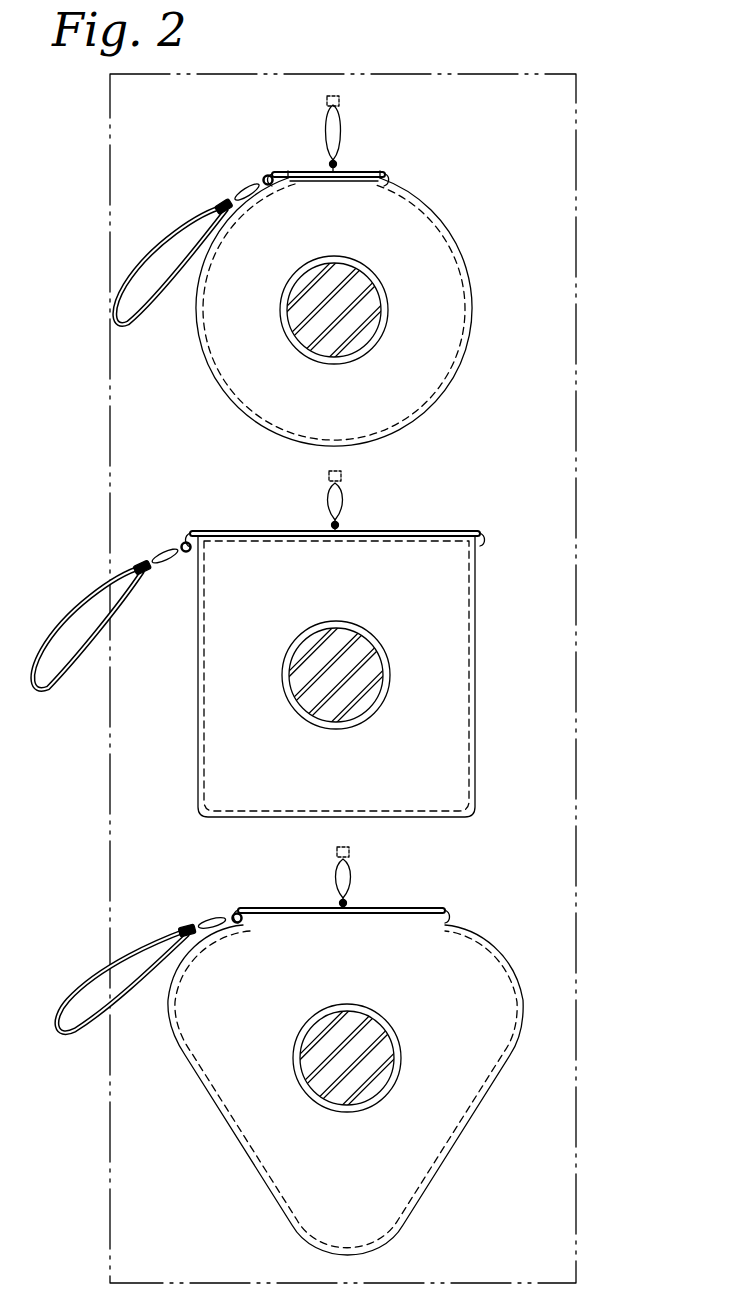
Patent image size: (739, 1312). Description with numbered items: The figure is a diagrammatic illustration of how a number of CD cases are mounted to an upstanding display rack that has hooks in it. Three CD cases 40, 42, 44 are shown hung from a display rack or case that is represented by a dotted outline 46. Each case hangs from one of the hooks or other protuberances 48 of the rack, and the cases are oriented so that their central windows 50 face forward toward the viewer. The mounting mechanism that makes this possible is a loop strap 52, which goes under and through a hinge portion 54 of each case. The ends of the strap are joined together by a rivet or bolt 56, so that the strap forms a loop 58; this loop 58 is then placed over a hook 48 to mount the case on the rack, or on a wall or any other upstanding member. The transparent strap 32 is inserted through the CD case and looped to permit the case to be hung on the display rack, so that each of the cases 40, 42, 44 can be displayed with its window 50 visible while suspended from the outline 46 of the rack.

The wrist strap 32 is at (186, 224).
The CD case 40 is at (430, 268).
The CD case 42 is at (445, 632).
The CD case 44 is at (452, 945).
The dotted outline 46 is at (578, 318).
The hooks or other protuberances 48 is at (341, 102).
The central window 50 is at (333, 272).
The loop strap 52 is at (284, 172).
The hinge portion 54 is at (334, 182).
The rivet or bolt 56 is at (336, 162).
The loop 58 is at (325, 126).